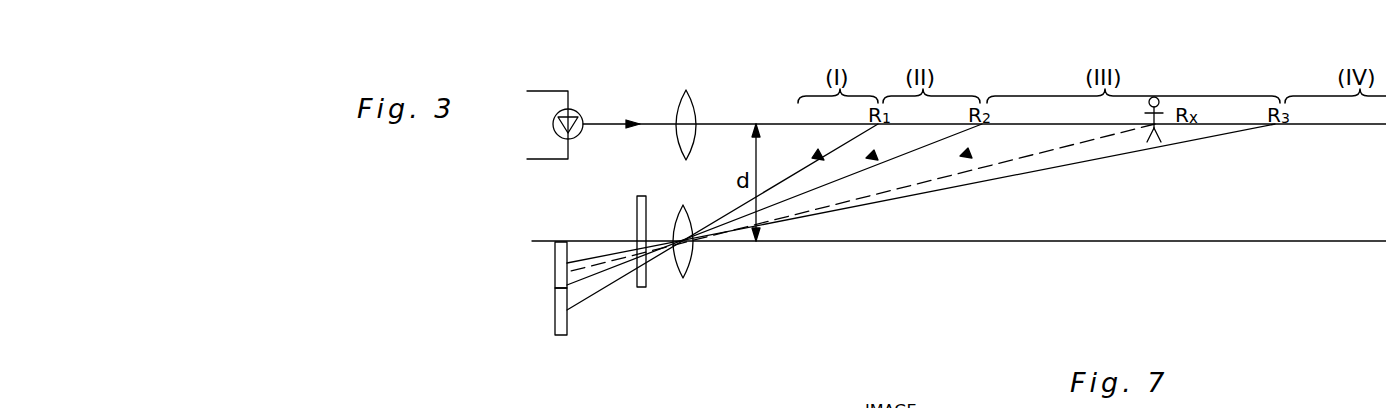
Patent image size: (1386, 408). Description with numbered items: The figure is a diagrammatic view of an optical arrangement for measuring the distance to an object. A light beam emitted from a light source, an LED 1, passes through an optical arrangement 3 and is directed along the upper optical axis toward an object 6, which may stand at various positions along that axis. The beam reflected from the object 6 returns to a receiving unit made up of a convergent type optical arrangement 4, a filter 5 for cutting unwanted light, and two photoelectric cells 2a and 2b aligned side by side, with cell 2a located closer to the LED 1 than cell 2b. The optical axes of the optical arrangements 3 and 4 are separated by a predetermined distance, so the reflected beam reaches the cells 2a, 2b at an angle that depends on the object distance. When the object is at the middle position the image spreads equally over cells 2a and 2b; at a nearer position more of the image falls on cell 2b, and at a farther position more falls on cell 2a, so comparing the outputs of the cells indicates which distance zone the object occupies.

The LED 1 is at (574, 113).
The photoelectric cell 2a is at (557, 272).
The photoelectric cell 2b is at (557, 317).
The optical arrangement 3 is at (691, 93).
The convergent type optical arrangement 4 is at (684, 208).
The filter 5 is at (645, 196).
The object 6 is at (1158, 97).